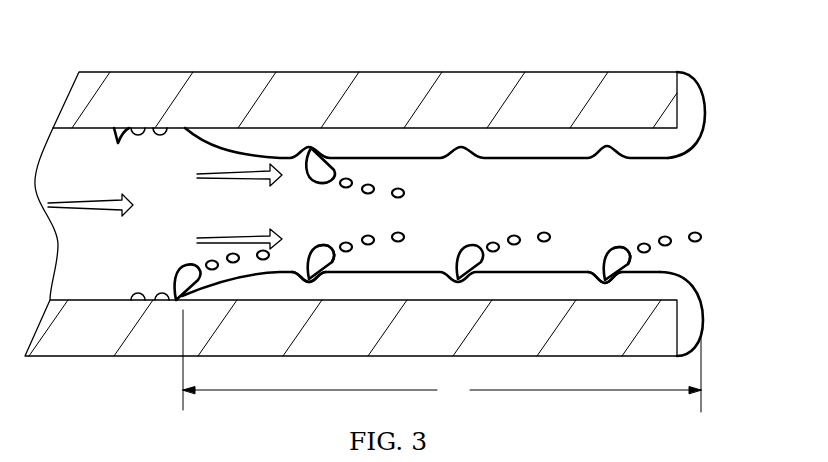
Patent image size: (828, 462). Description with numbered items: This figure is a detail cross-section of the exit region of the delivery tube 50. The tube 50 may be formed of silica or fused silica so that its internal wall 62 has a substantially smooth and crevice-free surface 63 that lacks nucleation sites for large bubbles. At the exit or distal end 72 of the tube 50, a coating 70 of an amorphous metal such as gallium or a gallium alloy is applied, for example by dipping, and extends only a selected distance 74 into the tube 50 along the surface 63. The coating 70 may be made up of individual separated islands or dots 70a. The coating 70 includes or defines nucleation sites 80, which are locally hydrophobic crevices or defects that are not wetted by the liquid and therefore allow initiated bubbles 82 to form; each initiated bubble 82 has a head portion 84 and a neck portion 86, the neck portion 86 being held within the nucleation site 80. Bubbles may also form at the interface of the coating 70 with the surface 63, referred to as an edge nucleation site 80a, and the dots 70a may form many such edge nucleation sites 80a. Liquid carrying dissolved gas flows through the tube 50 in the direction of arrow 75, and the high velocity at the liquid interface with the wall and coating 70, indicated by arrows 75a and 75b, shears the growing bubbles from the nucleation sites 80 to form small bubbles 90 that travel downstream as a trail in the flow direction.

The tube 50 is at (250, 65).
The internal wall 62 is at (114, 288).
The surface 63 is at (77, 288).
The coating 70 is at (706, 100).
The dots 70a is at (140, 128).
The distal end 72 is at (622, 64).
The distance 74 is at (442, 361).
The arrow 75 is at (105, 202).
The arrow 75a is at (213, 238).
The arrow 75b is at (229, 178).
The nucleation sites 80 is at (466, 162).
The edge nucleation site 80a is at (118, 143).
The initiated bubbles 82 is at (319, 243).
The head portion 84 is at (331, 245).
The neck portion 86 is at (308, 278).
The small bubble 90 is at (416, 234).